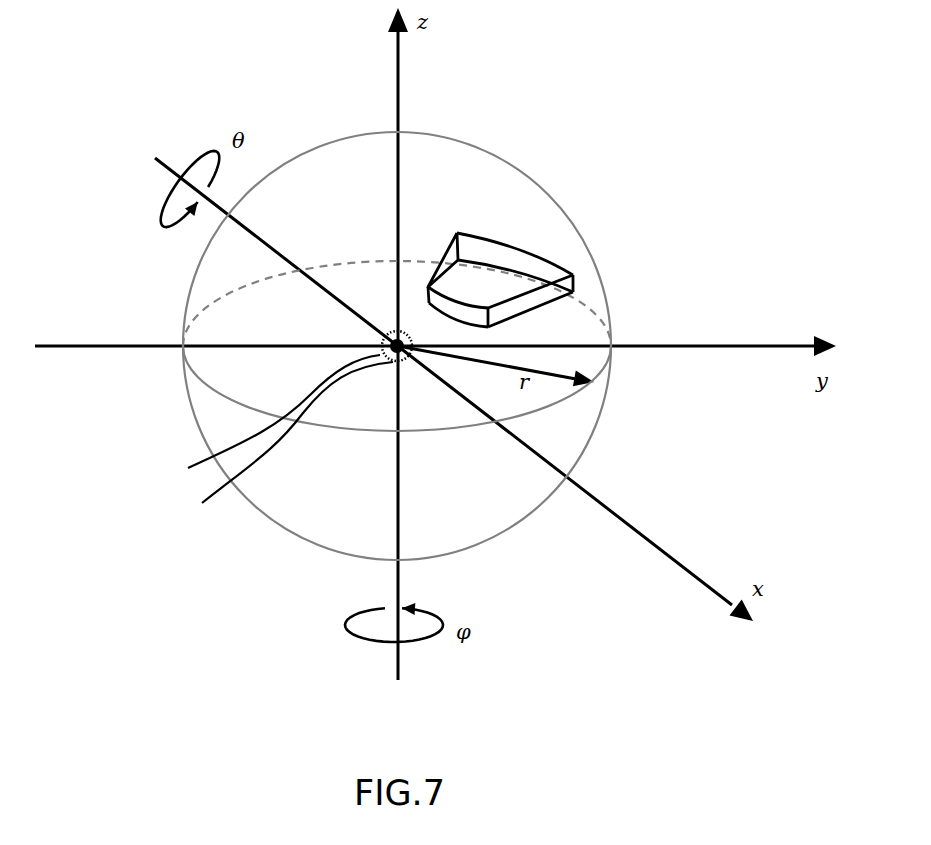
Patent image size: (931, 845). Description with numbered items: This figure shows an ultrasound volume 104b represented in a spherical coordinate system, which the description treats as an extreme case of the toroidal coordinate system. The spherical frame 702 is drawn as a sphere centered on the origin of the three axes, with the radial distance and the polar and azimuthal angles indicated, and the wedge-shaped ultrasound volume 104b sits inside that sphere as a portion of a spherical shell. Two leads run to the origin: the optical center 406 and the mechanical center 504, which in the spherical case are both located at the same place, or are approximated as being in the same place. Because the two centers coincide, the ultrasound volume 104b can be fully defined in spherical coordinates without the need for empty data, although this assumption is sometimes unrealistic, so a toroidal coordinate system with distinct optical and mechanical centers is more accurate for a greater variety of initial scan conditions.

The spherical coordinate surface 702 is at (492, 152).
The ultrasound volume 104b is at (547, 255).
The optical center 406 is at (261, 420).
The mechanical center 504 is at (274, 447).